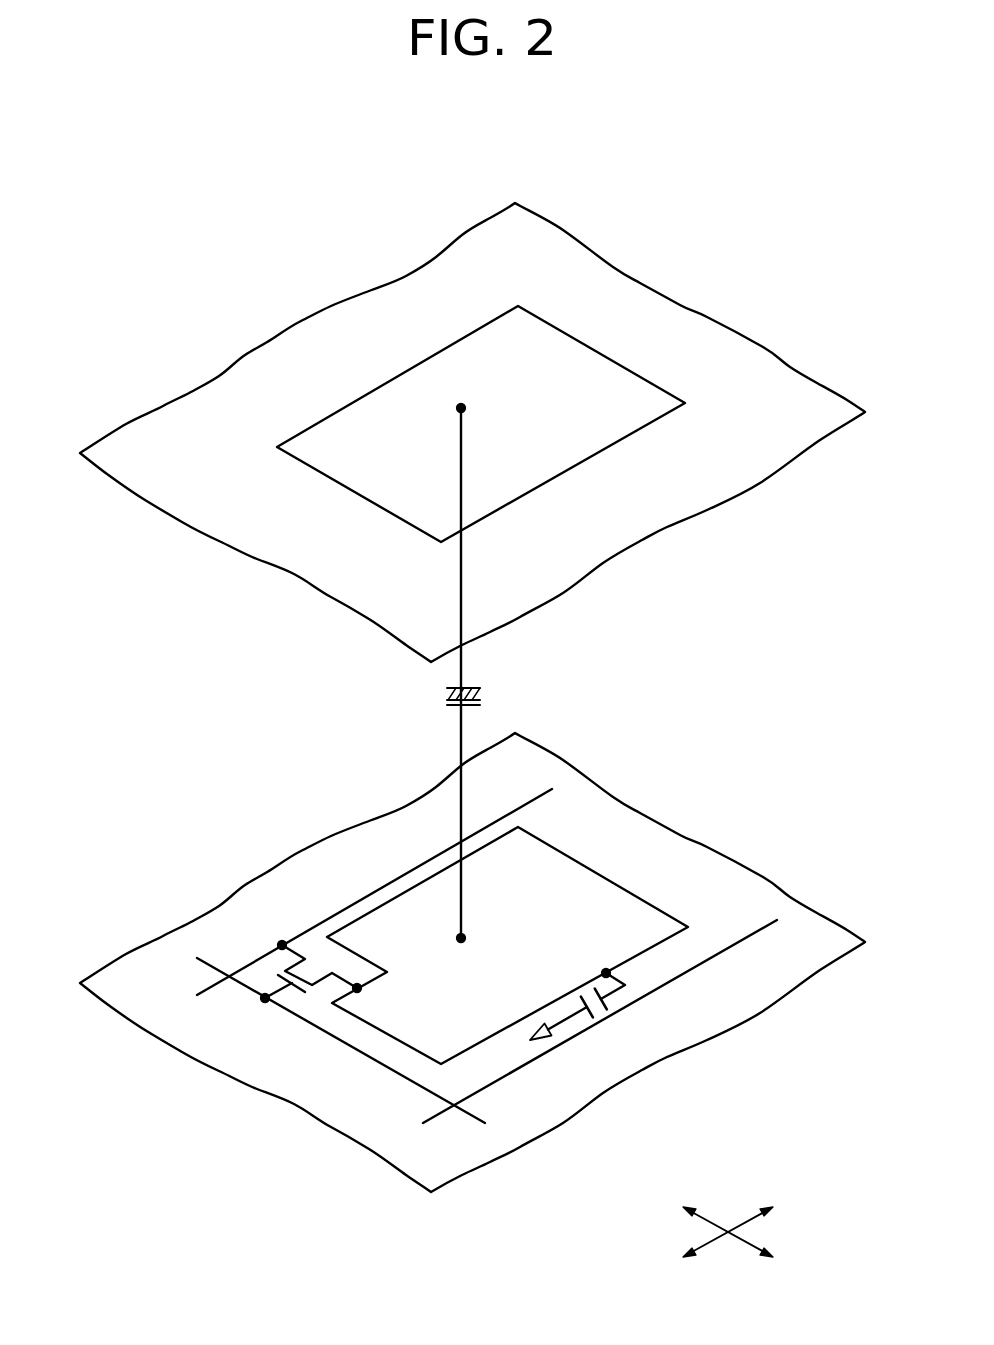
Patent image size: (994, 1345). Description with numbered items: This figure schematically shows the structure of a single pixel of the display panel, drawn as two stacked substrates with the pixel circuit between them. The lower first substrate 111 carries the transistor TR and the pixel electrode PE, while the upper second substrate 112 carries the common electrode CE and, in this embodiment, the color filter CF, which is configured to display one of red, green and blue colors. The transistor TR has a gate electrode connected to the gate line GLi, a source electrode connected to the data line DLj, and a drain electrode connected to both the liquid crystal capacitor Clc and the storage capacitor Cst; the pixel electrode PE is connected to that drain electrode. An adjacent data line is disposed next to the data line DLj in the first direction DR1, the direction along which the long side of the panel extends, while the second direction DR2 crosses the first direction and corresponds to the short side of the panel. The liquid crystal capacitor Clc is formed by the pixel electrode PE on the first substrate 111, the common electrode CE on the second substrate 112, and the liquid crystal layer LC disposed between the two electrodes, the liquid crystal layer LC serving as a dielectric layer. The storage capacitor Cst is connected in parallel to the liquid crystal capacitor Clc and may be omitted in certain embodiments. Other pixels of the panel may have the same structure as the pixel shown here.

The second substrate 112 is at (553, 602).
The first substrate 111 is at (640, 1073).
The common electrode CE is at (743, 473).
The color filter CF is at (572, 470).
The liquid crystal layer LC is at (643, 690).
The liquid crystal capacitor Clc is at (486, 698).
The pixel electrode PE is at (586, 863).
The gate line GLi is at (321, 1035).
The data line DLj is at (354, 900).
The transistor TR is at (297, 997).
The storage capacitor Cst is at (606, 1007).
The first direction DR1 is at (749, 1239).
The second direction DR2 is at (749, 1225).